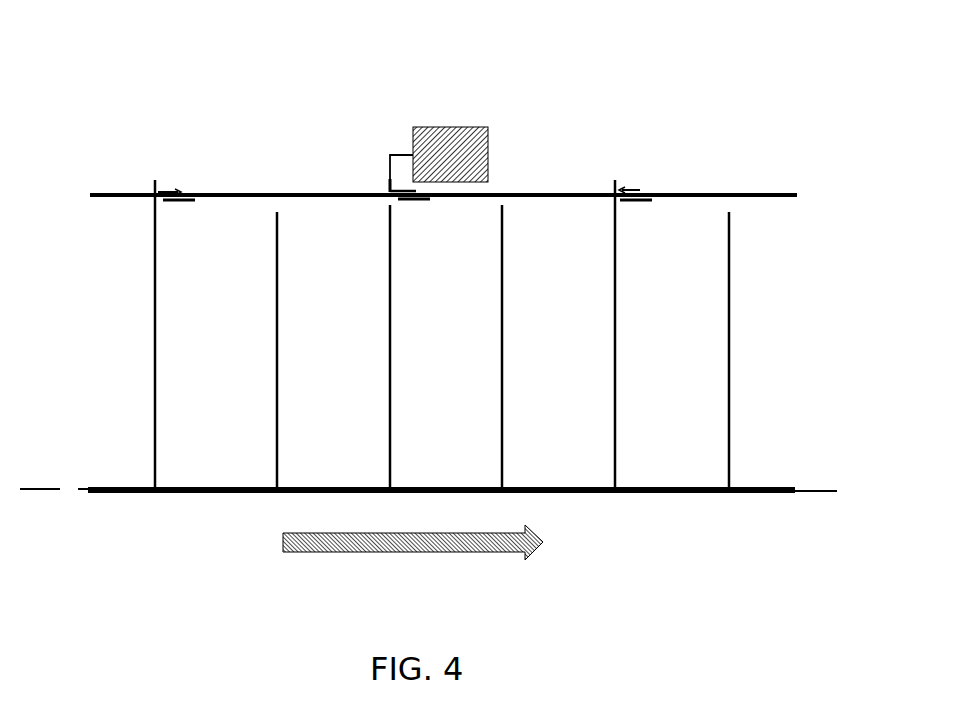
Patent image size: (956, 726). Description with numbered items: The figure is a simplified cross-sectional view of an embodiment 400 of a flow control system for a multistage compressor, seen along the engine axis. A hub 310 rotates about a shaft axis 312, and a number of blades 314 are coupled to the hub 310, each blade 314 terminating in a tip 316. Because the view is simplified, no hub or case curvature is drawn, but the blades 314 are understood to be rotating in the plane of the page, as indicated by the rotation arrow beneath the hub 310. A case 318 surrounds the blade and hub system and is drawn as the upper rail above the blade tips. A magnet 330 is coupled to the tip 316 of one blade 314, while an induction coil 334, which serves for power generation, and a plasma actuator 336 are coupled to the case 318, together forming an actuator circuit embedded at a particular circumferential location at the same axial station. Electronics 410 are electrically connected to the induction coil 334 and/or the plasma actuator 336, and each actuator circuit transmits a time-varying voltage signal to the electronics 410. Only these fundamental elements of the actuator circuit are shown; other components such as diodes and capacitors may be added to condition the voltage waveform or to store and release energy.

The embodiment of the flow control system 400 is at (98, 66).
The electronics 410 is at (455, 150).
The induction coil 334 is at (389, 190).
The magnet 330 is at (388, 208).
The plasma actuator 336 is at (407, 199).
The tip 316 is at (503, 203).
The case 318 is at (745, 194).
The blade 314 is at (276, 393).
The hub 310 is at (668, 487).
The shaft axis 312 is at (811, 490).